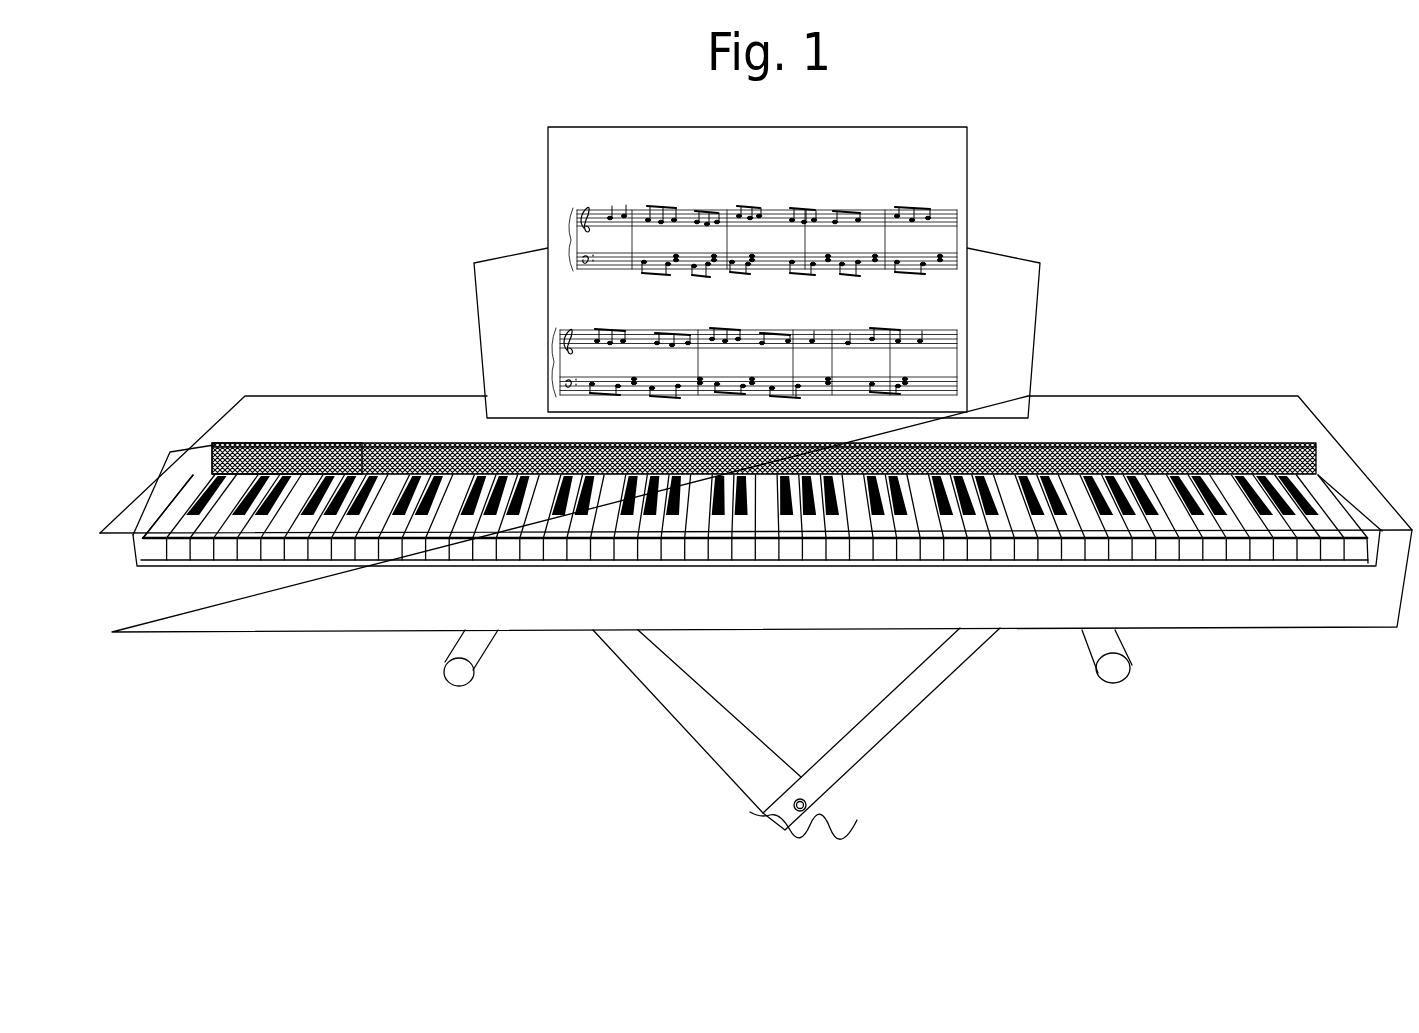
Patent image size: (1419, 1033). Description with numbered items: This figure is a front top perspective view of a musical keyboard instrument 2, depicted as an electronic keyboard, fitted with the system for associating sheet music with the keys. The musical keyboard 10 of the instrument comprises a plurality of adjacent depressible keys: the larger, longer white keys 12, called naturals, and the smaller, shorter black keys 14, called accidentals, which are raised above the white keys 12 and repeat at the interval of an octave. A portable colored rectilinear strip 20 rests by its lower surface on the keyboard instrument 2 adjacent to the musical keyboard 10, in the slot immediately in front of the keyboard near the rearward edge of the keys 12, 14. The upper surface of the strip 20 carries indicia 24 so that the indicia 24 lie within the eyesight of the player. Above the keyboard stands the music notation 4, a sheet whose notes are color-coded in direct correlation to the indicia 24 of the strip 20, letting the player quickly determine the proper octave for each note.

The musical keyboard instrument 2 is at (1355, 628).
The music notation 4 is at (980, 232).
The musical keyboard 10 is at (1317, 523).
The white keys 12 is at (258, 527).
The black keys 14 is at (708, 514).
The colored rectilinear strip 20 is at (1218, 442).
The indicia 24 is at (327, 447).